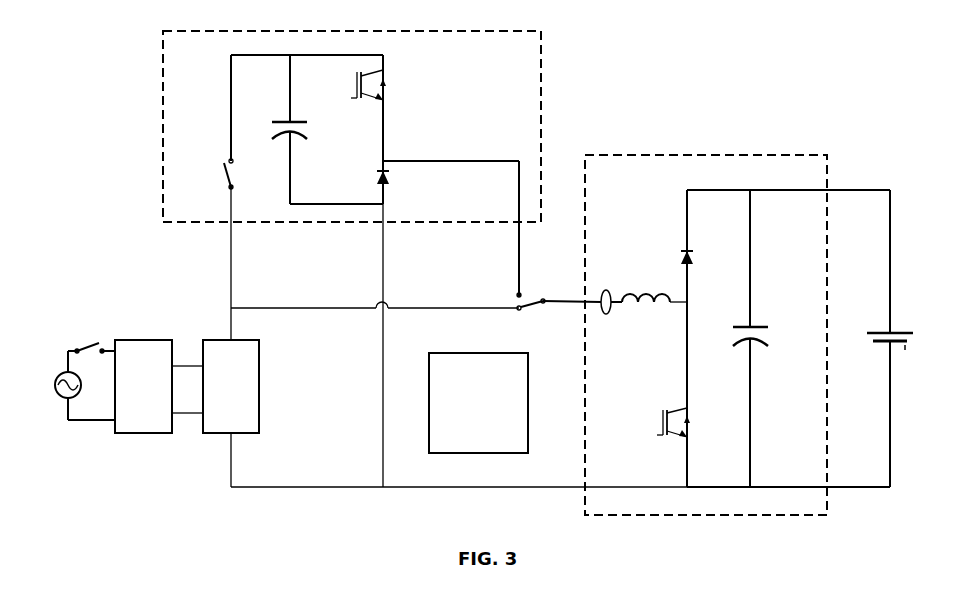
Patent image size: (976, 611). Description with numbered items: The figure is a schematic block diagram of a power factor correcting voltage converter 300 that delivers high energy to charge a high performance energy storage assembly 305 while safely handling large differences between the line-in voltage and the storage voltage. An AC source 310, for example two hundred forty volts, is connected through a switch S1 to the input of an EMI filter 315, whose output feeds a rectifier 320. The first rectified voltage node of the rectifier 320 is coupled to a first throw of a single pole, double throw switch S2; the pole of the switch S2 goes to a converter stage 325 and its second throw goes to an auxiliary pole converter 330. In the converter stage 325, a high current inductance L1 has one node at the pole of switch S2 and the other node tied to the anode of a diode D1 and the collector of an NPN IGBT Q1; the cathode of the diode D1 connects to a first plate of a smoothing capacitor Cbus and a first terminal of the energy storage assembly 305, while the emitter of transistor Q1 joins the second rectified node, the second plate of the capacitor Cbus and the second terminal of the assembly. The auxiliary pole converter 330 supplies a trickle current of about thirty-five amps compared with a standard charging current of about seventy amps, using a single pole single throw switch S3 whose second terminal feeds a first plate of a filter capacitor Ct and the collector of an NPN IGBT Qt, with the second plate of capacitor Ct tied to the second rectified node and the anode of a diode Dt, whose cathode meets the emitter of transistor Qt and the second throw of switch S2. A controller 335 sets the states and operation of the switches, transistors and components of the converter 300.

The power factor correcting voltage converter 300 is at (668, 75).
The energy storage assembly 305 is at (883, 323).
The AC source 310 is at (80, 403).
The EMI filter 315 is at (143, 386).
The rectifier 320 is at (231, 386).
The converter stage 325 is at (708, 155).
The auxiliary pole converter 330 is at (405, 30).
The controller 335 is at (478, 403).
The switch S1 is at (90, 335).
The single pole, double throw switch S2 is at (527, 321).
The single pole single throw switch S3 is at (212, 186).
The NPN IGBT Qt is at (357, 112).
The filter capacitor Ct is at (302, 147).
The diode Dt is at (372, 182).
The high current inductance L1 is at (648, 290).
The diode D1 is at (678, 255).
The NPN IGBT Q1 is at (672, 390).
The smoothing capacitor Cbus is at (760, 350).